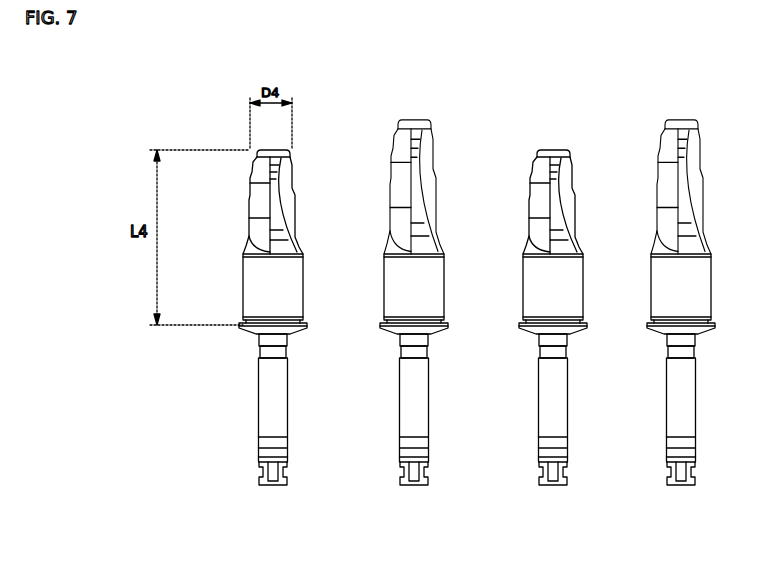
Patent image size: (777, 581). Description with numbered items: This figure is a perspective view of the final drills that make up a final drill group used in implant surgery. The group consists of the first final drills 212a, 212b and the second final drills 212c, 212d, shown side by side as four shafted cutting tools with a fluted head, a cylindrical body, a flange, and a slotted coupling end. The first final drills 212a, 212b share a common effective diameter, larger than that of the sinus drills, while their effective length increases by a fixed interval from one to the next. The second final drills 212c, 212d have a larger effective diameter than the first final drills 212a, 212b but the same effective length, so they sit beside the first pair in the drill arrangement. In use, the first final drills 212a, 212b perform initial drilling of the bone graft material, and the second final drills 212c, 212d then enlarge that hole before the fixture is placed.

The first final drill 212a is at (272, 488).
The first final drill 212b is at (413, 488).
The second final drill 212c is at (552, 488).
The second final drill 212d is at (680, 488).